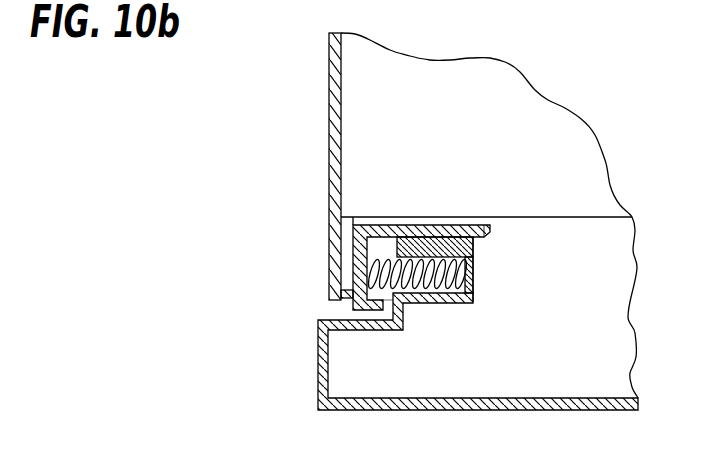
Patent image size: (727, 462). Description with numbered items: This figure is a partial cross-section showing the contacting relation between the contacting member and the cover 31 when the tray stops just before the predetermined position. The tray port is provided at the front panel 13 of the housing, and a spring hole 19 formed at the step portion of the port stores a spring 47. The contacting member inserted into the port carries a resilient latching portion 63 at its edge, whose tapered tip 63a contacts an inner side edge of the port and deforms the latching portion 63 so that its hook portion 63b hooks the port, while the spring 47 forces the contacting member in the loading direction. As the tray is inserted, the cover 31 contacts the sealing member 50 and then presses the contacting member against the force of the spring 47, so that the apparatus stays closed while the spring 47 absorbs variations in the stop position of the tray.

The front panel 13 is at (318, 365).
The spring hole 19 is at (385, 292).
The cover 31 is at (330, 148).
The spring 47 is at (420, 272).
The sealing member 50 is at (340, 297).
The resilient latching portion 63 is at (416, 226).
The tip 63a is at (498, 233).
The hook portion 63b is at (478, 240).